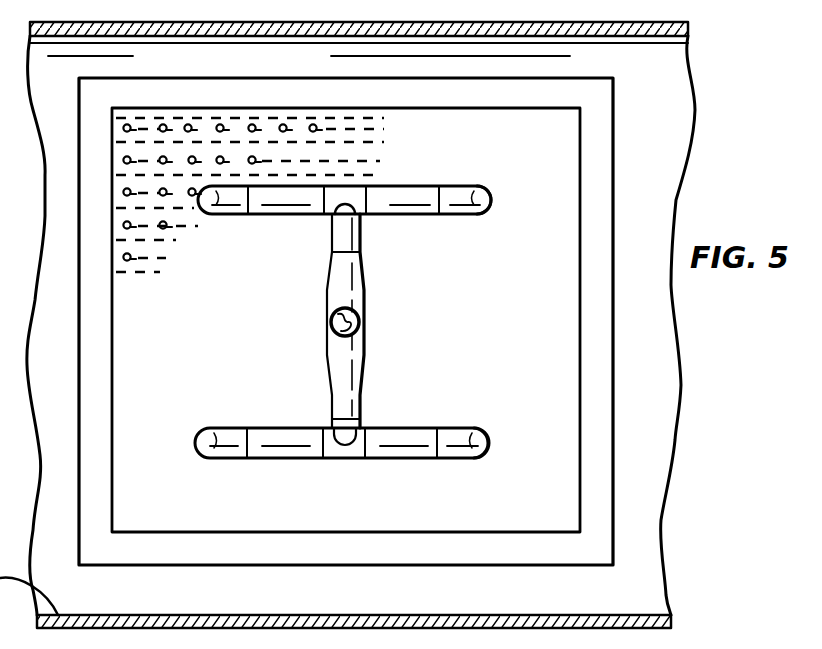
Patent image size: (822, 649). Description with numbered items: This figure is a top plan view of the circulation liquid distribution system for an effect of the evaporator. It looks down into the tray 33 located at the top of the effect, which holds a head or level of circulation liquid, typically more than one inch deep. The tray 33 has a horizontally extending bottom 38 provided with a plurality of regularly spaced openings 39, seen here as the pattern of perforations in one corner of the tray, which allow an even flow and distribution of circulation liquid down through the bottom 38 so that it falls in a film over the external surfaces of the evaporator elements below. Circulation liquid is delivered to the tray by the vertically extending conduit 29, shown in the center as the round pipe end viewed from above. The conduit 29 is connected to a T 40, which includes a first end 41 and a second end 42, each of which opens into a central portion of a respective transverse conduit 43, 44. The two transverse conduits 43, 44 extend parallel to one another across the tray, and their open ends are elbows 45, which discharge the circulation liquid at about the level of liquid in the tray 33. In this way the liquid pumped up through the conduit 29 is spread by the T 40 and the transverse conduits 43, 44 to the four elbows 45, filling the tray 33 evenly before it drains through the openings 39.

The vertically extending conduit portion 29 is at (360, 322).
The tray 33 is at (676, 550).
The horizontally extending bottom 38 is at (203, 127).
The regularly spaced openings 39 is at (252, 158).
The T 40 is at (364, 300).
The first end 41 is at (362, 220).
The second end 42 is at (360, 426).
The transverse conduit 43 is at (387, 191).
The transverse conduit 44 is at (400, 443).
The elbows 45 is at (488, 200).